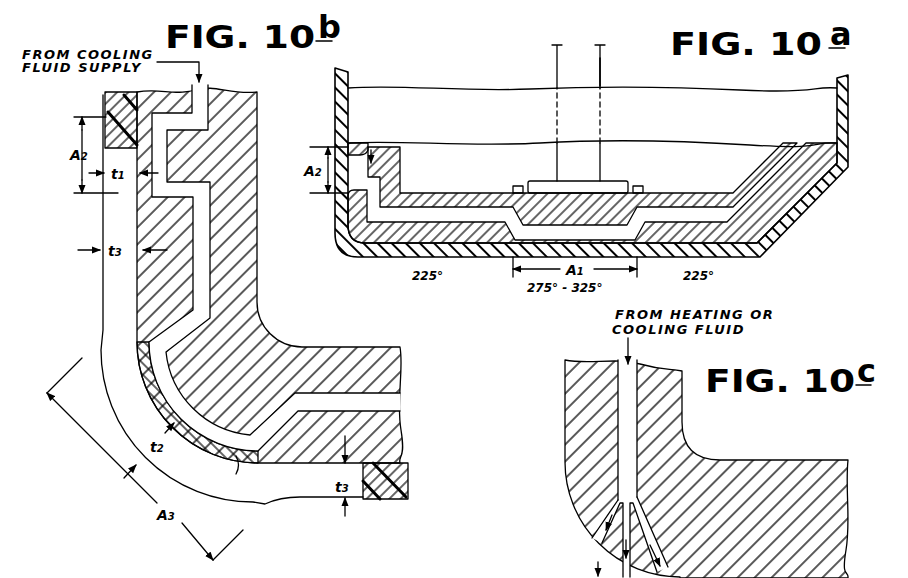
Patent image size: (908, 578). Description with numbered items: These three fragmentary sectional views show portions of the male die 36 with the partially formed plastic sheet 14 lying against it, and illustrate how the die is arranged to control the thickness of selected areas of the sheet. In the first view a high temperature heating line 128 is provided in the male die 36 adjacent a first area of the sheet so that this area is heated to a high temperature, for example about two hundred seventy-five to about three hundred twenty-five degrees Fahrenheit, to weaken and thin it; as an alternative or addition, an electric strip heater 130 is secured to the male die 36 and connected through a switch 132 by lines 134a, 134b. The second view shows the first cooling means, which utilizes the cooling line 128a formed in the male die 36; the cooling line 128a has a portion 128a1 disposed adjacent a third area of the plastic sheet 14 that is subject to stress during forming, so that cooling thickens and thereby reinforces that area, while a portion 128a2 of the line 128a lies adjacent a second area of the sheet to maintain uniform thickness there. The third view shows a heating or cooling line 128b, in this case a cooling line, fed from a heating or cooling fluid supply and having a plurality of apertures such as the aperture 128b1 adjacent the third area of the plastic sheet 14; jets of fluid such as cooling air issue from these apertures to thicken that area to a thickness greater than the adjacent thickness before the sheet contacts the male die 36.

In FIG. 10B, the plastic sheet 14 is at (108, 289).
In FIG. 10B, the male die 36 is at (248, 282).
In FIG. 10A, the male die 36 is at (487, 119).
In FIG. 10C, the male die 36 is at (570, 404).
In FIG. 10A, the high temperature heating line 128 is at (463, 213).
In FIG. 10B, the cooling line 128a is at (262, 79).
In FIG. 10B, the portion of cooling line 128a1 is at (240, 466).
In FIG. 10B, the portion of cooling line 128a2 is at (103, 222).
In FIG. 10C, the heating or cooling line 128b is at (630, 424).
In FIG. 10C, the aperture 128b1 is at (600, 532).
In FIG. 10A, the electric strip heater 130 is at (620, 186).
In FIG. 10A, the switch 132 is at (601, 68).
In FIG. 10A, the line 134a is at (556, 56).
In FIG. 10A, the line 134b is at (601, 48).